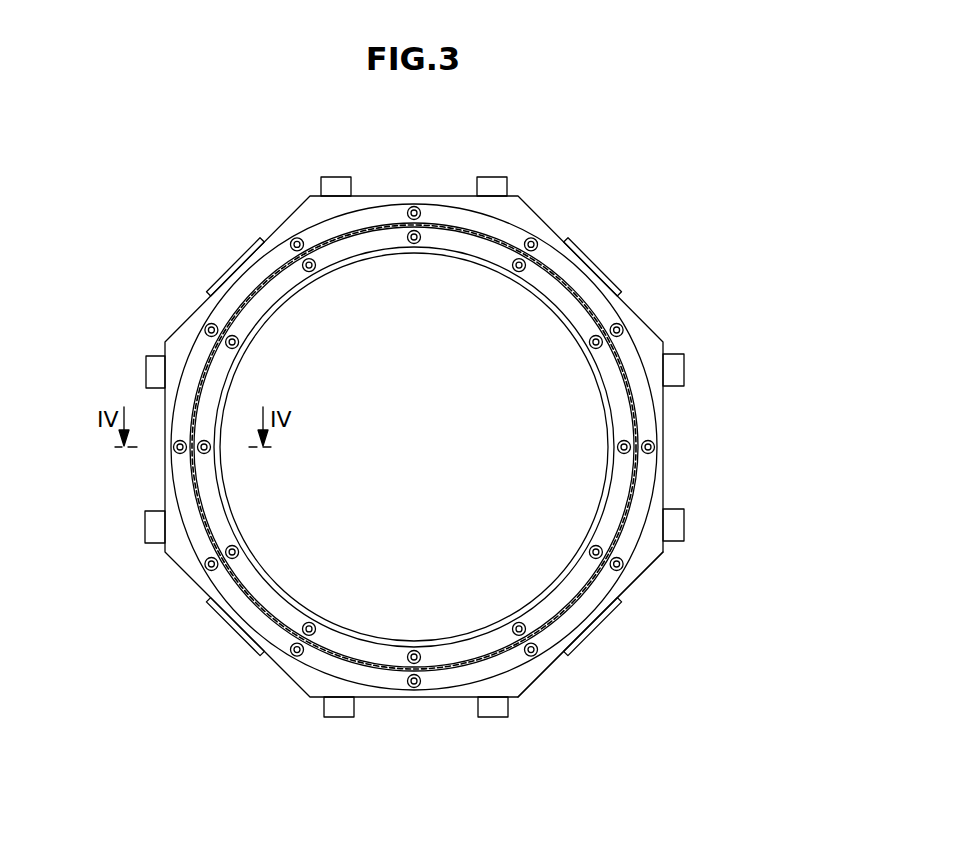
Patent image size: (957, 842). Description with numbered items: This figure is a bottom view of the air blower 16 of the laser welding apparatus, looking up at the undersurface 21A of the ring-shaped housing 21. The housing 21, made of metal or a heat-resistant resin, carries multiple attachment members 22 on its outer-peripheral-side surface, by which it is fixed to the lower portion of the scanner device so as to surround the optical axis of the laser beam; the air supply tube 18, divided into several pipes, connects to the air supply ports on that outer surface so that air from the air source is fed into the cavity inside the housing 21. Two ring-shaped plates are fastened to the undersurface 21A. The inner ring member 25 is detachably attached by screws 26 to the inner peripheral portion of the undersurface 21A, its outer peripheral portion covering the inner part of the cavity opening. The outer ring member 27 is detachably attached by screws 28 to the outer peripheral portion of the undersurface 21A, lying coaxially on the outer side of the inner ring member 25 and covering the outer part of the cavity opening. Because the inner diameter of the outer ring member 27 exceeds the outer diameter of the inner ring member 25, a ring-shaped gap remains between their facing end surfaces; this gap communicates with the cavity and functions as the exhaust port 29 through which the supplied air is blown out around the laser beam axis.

The air blower 16 is at (642, 155).
The air supply tube 18 is at (336, 177).
The housing 21 is at (651, 331).
The undersurface 21A is at (648, 553).
The attachment member 22 is at (238, 257).
The inner ring member 25 is at (541, 612).
The screw 26 is at (214, 548).
The outer ring member 27 is at (601, 592).
The screw 28 is at (208, 326).
The exhaust port 29 is at (573, 608).